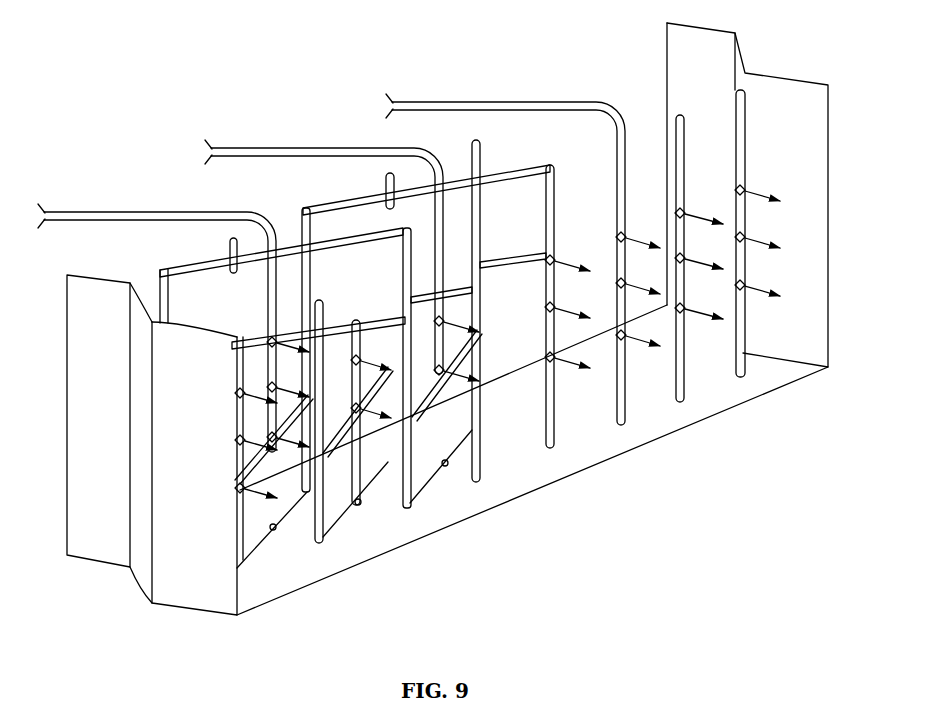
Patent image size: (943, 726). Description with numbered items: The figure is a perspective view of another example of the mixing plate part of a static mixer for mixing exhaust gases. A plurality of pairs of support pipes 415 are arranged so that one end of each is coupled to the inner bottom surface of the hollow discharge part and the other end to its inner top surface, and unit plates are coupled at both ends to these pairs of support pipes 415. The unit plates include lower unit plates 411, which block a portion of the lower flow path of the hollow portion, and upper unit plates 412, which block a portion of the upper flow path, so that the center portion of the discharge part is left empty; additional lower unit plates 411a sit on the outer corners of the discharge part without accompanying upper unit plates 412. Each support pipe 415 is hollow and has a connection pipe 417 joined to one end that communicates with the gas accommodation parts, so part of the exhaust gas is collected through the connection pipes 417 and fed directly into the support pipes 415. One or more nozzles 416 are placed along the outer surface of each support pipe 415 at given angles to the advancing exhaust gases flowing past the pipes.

The lower unit plate 411 is at (362, 462).
The lower unit plate 411a is at (743, 333).
The upper unit plate 412 is at (512, 188).
The support pipe 415 is at (626, 137).
The nozzle 416 is at (612, 255).
The connection pipe 417 is at (170, 210).